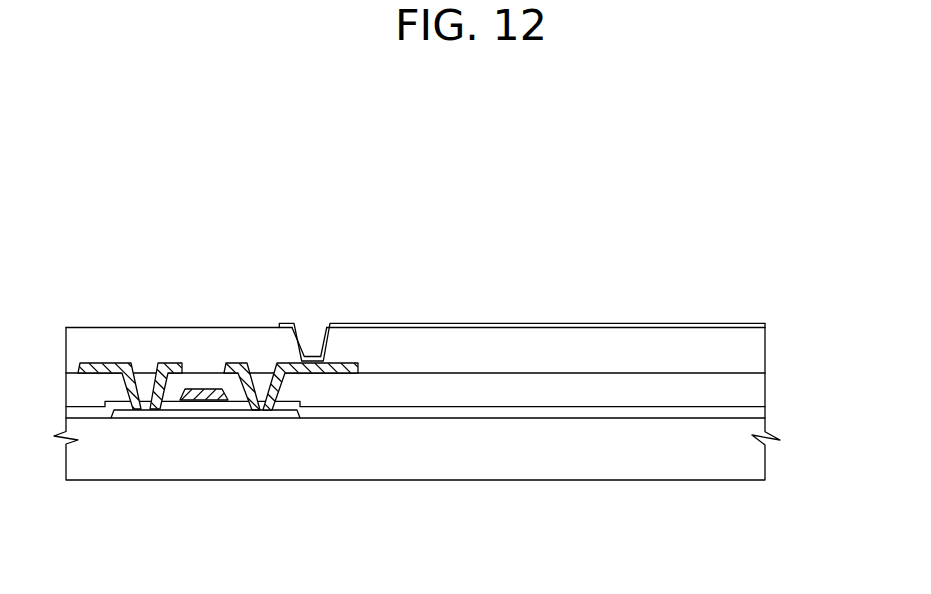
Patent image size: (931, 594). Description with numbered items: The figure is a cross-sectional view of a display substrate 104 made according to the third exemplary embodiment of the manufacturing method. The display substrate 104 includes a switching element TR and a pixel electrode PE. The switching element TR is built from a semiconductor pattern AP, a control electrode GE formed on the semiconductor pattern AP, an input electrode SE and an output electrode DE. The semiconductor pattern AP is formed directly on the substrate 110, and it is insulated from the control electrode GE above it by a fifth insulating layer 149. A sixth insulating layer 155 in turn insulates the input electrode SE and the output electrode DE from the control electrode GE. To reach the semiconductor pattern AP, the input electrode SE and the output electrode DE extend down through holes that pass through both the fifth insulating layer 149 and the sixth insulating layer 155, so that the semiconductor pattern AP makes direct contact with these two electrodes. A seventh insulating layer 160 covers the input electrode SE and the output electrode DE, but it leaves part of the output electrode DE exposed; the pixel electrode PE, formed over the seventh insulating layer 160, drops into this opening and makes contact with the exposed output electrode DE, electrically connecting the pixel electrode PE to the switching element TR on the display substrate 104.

The display substrate 104 is at (460, 206).
The substrate 110 is at (762, 462).
The fifth insulating layer 149 is at (760, 412).
The sixth insulating layer 155 is at (760, 385).
The seventh insulating layer 160 is at (760, 352).
The pixel electrode PE is at (768, 323).
The switching element TR is at (218, 465).
The input electrode SE is at (134, 409).
The control electrode GE is at (182, 400).
The semiconductor pattern AP is at (227, 400).
The output electrode DE is at (310, 445).